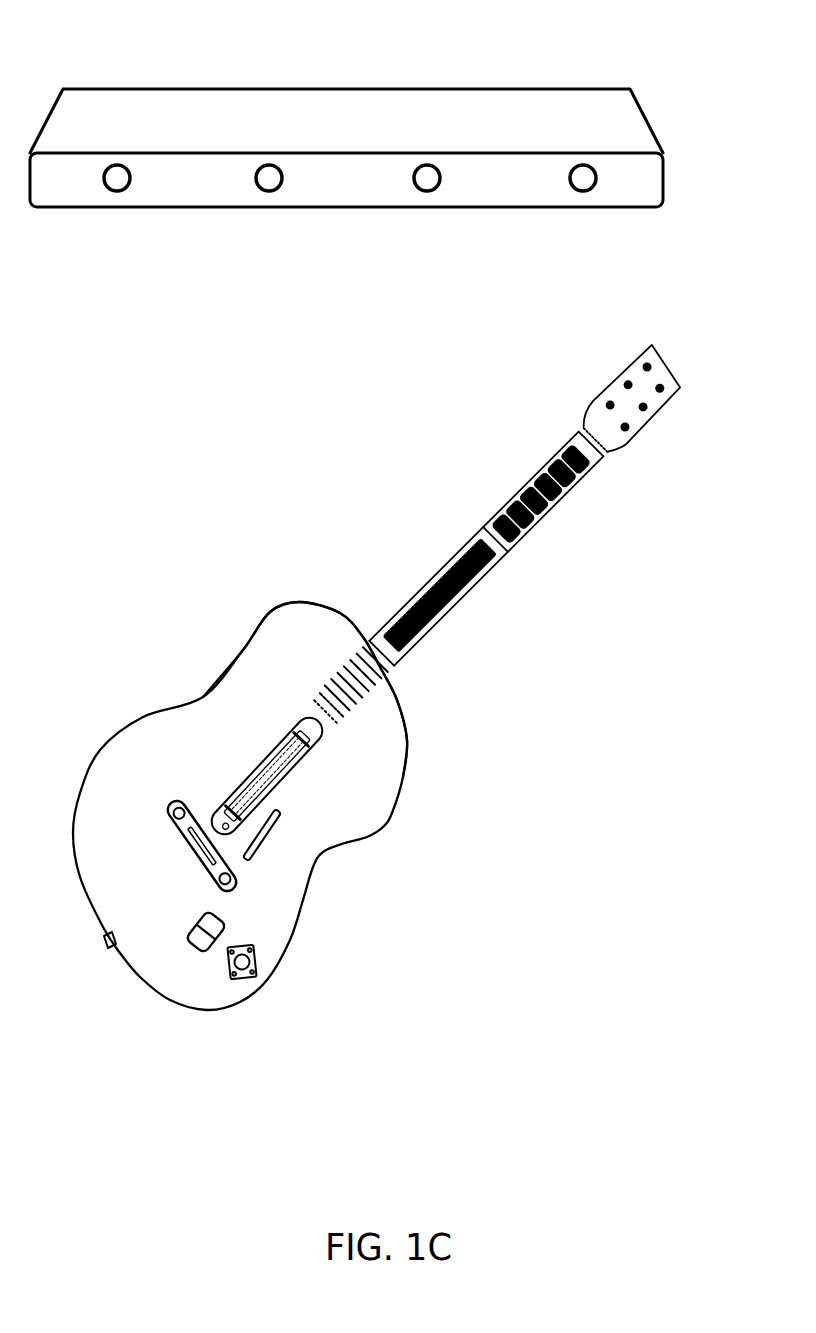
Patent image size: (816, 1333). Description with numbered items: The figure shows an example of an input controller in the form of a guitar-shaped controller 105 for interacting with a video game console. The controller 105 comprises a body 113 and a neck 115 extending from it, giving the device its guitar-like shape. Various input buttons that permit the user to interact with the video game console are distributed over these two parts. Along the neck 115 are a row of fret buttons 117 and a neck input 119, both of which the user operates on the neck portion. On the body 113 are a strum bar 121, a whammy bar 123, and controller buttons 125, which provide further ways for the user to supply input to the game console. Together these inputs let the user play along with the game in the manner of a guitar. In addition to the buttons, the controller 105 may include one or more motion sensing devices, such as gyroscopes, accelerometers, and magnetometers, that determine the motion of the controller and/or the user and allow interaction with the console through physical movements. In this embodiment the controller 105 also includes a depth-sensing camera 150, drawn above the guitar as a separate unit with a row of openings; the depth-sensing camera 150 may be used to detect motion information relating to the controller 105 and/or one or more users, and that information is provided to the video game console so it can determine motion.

The depth-sensing camera 150 is at (612, 82).
The guitar-shaped controller 105 is at (387, 827).
The body 113 is at (270, 610).
The neck 115 is at (505, 570).
The fret buttons 117 is at (496, 527).
The neck input 119 is at (427, 592).
The strum bar 121 is at (263, 755).
The whammy bar 123 is at (273, 830).
The controller buttons 125 is at (193, 857).